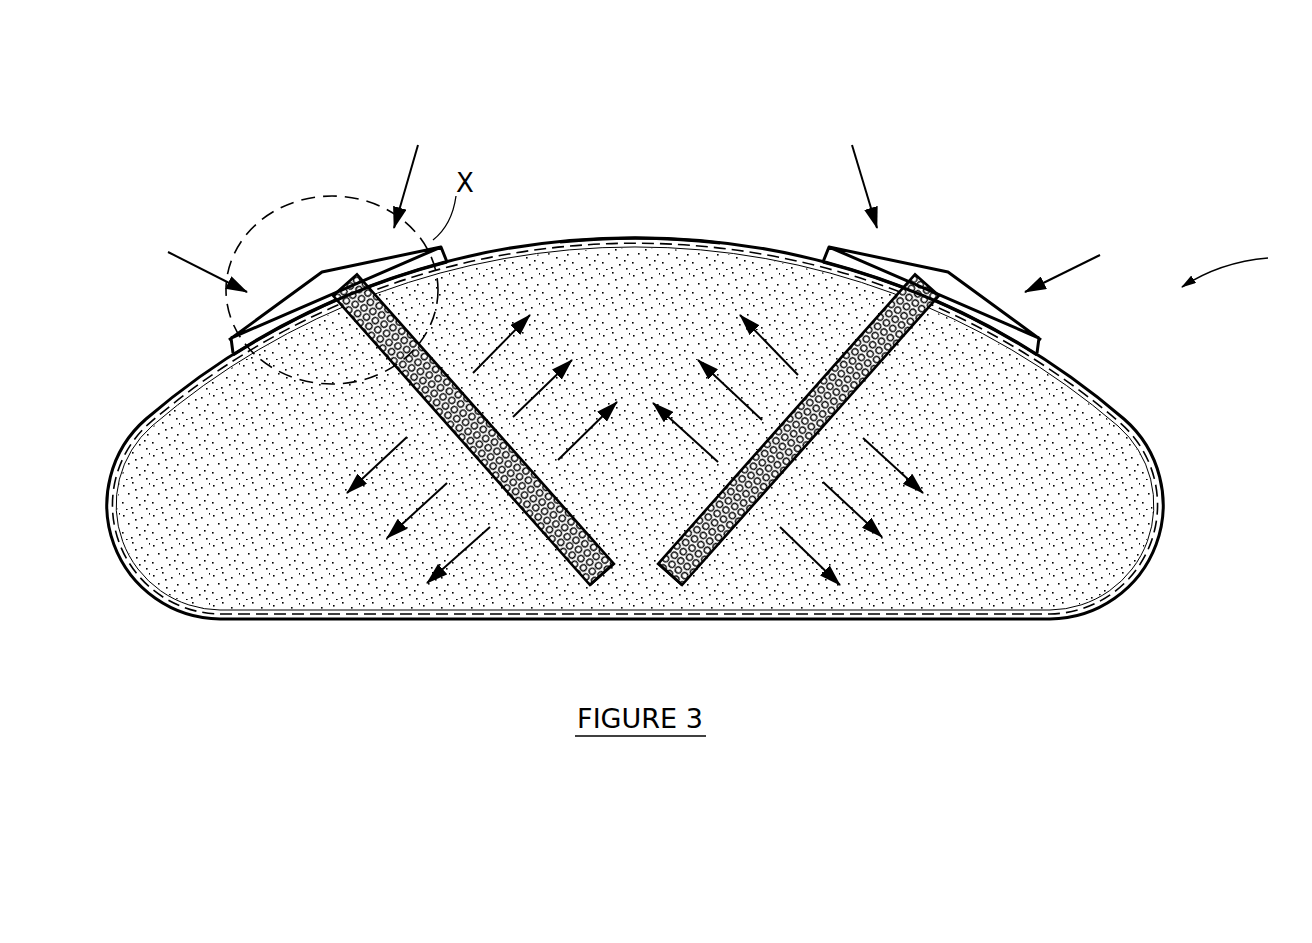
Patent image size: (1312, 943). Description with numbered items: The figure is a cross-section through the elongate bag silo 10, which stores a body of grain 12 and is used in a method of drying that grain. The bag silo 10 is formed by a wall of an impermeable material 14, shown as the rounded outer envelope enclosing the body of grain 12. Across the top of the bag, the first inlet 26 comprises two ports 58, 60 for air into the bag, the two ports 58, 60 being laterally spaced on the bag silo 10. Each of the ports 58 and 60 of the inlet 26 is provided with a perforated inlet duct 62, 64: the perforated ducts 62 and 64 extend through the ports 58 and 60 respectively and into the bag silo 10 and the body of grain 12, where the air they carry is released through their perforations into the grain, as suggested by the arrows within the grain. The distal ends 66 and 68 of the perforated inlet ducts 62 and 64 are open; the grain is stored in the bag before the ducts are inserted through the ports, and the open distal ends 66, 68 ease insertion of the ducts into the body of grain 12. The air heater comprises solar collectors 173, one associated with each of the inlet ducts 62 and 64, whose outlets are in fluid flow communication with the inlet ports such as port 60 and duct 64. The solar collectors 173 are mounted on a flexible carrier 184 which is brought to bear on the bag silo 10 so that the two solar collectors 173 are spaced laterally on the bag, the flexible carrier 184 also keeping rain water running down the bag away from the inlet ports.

The bag silo 10 is at (1073, 102).
The body of grain 12 is at (1107, 568).
The wall of an impermeable material 14 is at (1172, 512).
The first inlet 26 is at (1244, 262).
The port 58 is at (947, 310).
The port 60 is at (322, 305).
The perforated inlet duct 62 is at (921, 285).
The perforated inlet duct 64 is at (318, 268).
The distal end 66 is at (668, 582).
The distal end 68 is at (617, 580).
The solar collector 173 is at (283, 232).
The flexible carrier 184 is at (636, 240).